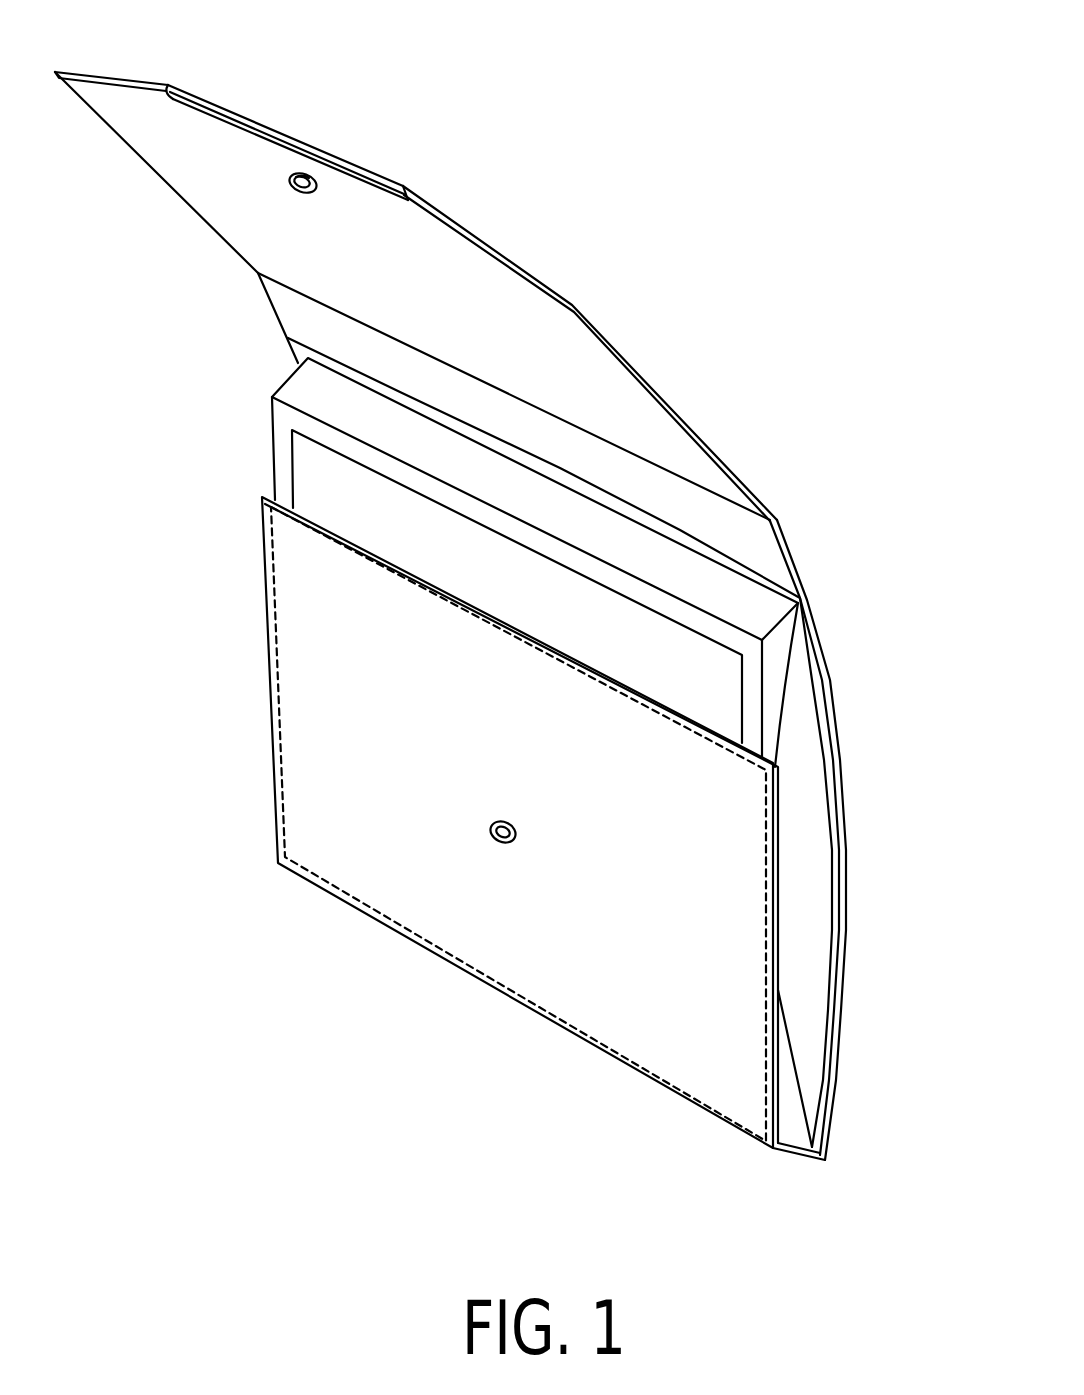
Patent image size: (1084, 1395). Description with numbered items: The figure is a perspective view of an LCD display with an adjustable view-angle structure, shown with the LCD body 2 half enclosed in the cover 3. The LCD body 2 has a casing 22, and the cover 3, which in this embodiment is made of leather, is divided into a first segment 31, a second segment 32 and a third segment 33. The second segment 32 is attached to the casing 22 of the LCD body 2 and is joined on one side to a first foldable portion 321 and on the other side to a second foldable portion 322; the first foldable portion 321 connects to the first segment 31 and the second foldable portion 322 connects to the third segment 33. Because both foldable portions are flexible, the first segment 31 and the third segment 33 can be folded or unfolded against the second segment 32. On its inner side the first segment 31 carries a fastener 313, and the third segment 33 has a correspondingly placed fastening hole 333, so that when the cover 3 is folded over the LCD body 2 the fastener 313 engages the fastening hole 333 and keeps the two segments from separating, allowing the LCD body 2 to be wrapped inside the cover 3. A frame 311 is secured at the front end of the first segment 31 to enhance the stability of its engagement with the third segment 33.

The LCD body 2 is at (538, 752).
The casing 22 is at (817, 963).
The cover 3 is at (495, 643).
The first segment 31 is at (416, 260).
The frame 311 is at (238, 116).
The fastener 313 is at (298, 193).
The second segment 32 is at (596, 780).
The first foldable portion 321 is at (800, 559).
The second foldable portion 322 is at (793, 1163).
The third segment 33 is at (469, 822).
The fastening hole 333 is at (490, 845).